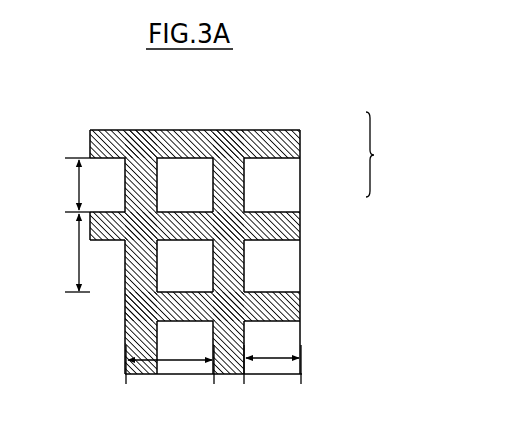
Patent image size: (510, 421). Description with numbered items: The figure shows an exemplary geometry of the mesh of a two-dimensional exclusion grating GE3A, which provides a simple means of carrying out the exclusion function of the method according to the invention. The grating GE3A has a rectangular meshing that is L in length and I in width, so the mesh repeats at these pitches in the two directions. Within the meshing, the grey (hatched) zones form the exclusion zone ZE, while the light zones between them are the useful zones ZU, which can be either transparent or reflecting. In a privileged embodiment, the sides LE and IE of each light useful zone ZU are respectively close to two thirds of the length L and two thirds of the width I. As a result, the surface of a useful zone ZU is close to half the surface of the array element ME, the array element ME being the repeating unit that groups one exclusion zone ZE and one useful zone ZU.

The exclusion grating GE3A is at (196, 222).
The exclusion zone ZE is at (301, 143).
The useful zone ZU is at (283, 200).
The array element ME is at (391, 154).
The useful zone side (width) IE is at (65, 185).
The mesh width I is at (68, 253).
The mesh length L is at (170, 355).
The useful zone side (length) LE is at (272, 355).